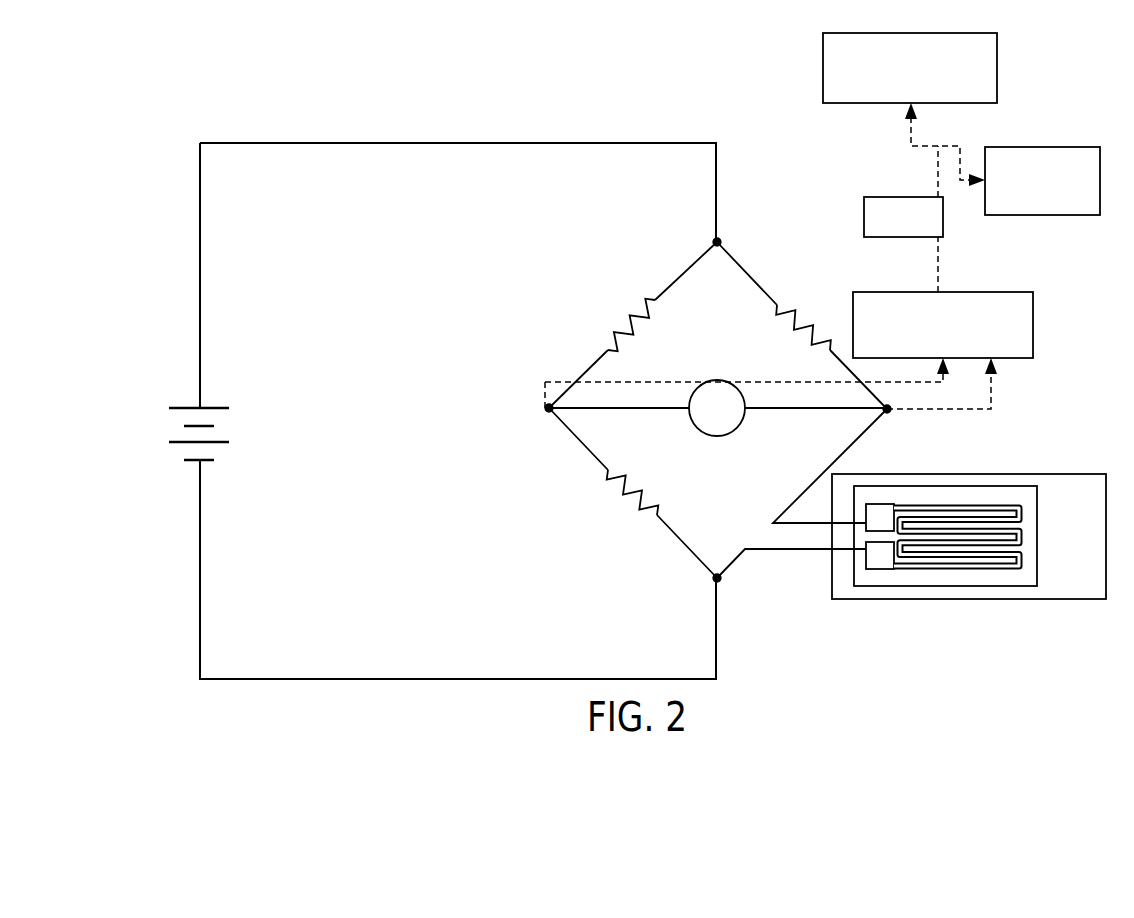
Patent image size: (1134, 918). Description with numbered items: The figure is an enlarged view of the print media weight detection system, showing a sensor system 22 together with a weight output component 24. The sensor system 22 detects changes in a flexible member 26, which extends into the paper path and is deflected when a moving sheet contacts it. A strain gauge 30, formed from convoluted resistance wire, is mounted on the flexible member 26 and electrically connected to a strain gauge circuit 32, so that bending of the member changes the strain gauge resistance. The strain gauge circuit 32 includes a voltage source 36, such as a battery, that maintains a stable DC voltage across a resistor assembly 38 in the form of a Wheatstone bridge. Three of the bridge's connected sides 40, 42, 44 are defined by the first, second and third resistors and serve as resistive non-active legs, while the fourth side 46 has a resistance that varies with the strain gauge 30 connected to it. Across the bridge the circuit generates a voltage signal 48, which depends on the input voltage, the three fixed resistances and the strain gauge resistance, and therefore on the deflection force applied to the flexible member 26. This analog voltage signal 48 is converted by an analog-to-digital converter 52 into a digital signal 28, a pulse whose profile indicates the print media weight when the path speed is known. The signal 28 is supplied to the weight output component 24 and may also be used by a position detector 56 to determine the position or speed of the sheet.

The sensor system 22 is at (305, 103).
The weight output component 24 is at (823, 73).
The flexible member 26 is at (1055, 474).
The signal 28 is at (864, 222).
The strain gauge 30 is at (908, 568).
The strain gauge circuit 32 is at (535, 143).
The voltage source 36 is at (180, 407).
The resistor assembly 38 is at (578, 247).
The first side 40 is at (597, 362).
The second side 42 is at (747, 267).
The third side 44 is at (580, 443).
The fourth side 46 is at (735, 560).
The voltage signal 48 is at (737, 432).
The analog-to-digital converter 52 is at (1033, 328).
The position detector 56 is at (1037, 147).